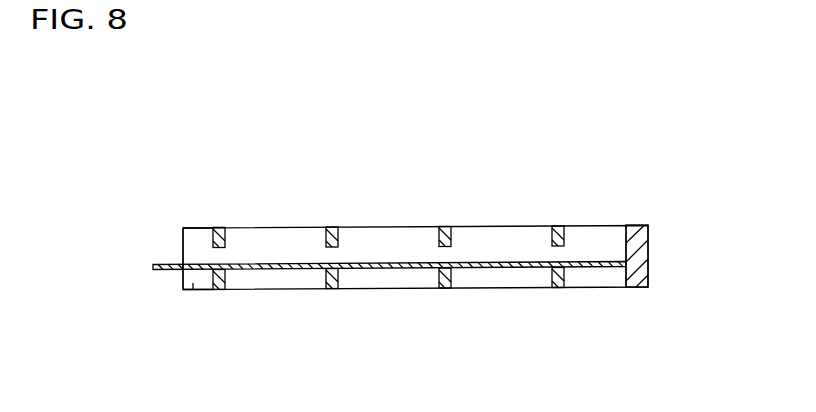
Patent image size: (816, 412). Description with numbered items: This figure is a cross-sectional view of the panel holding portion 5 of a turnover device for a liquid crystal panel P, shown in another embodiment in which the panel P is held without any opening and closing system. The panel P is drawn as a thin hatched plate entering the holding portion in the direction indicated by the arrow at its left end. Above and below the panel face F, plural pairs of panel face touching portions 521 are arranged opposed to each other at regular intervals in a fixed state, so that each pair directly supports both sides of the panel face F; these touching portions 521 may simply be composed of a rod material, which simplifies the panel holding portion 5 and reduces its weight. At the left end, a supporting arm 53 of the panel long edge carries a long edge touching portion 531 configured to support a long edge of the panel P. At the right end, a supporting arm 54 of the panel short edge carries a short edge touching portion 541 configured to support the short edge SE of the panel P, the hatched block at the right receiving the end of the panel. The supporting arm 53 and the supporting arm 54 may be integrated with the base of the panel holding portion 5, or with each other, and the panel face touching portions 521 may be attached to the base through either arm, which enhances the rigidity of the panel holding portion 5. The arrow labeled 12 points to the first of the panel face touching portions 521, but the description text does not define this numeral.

The panel holding portion 5 is at (298, 163).
The detection element 12 is at (216, 225).
The supporting arm of a panel long edge 53 is at (183, 240).
The long edge touching portion 531 is at (193, 283).
The panel face touching portions 521 is at (226, 239).
The supporting arm of a panel short edge 54 is at (640, 225).
The short edge touching portion 541 is at (625, 230).
The short edge SE is at (648, 266).
The liquid crystal panel P is at (151, 267).
The panel face F is at (289, 262).